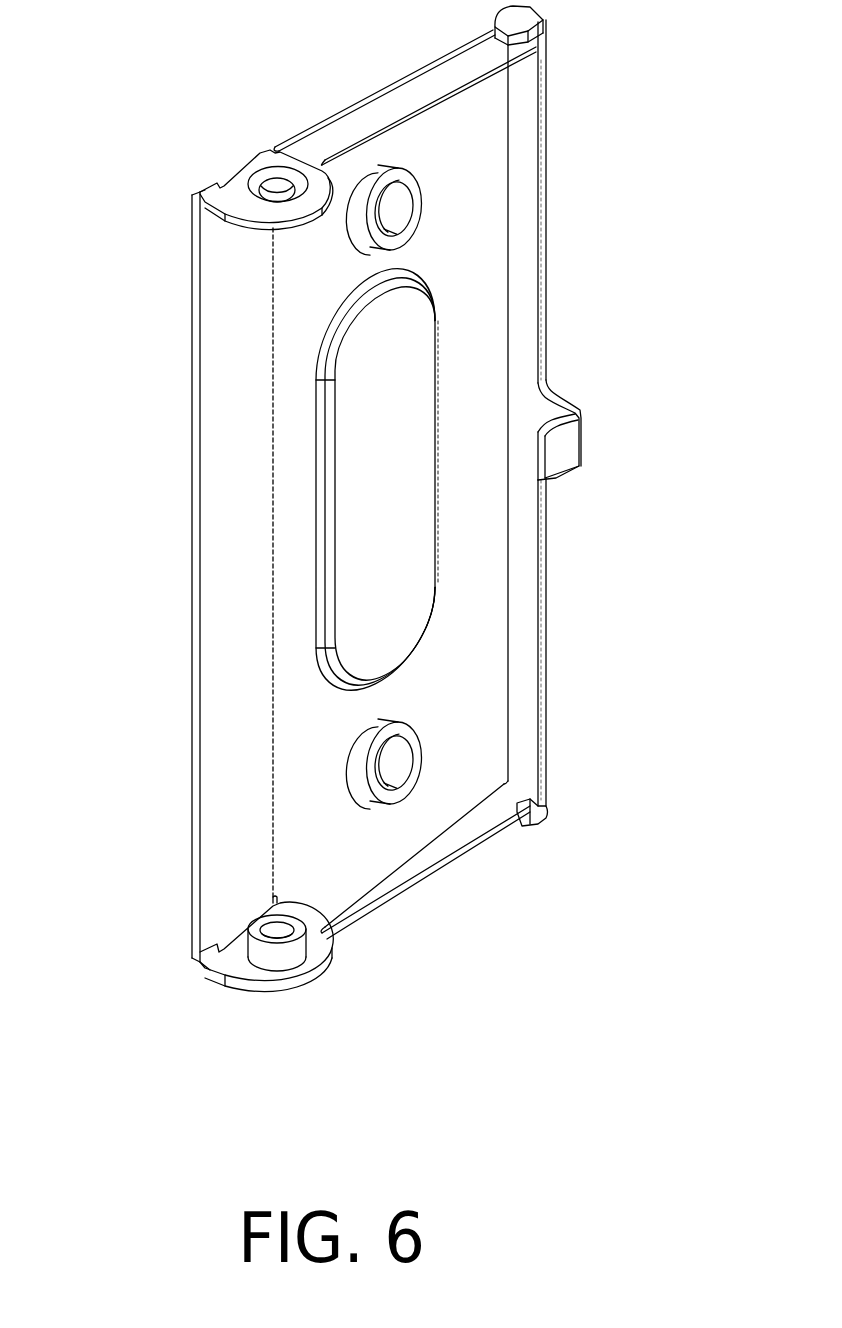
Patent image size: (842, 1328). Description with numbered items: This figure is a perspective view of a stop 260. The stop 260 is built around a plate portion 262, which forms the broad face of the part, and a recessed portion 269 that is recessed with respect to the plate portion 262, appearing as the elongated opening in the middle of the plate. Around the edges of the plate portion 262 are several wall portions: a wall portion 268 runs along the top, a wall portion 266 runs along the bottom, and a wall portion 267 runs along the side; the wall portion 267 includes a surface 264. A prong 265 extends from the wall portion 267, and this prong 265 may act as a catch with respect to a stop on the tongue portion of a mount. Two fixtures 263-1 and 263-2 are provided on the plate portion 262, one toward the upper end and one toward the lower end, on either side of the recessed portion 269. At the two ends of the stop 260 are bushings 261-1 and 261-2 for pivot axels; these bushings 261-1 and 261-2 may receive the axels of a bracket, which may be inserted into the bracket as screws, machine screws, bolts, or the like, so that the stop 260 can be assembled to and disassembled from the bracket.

The stop 260 is at (213, 48).
The plate portion 262 is at (479, 684).
The wall portion 268 is at (413, 87).
The wall portion 266 is at (430, 857).
The surface 264 is at (548, 268).
The wall portion 267 is at (540, 600).
The prong 265 is at (560, 467).
The recessed portion 269 is at (406, 499).
The fixture 263-1 is at (357, 765).
The fixture 263-2 is at (356, 240).
The bushing 261-1 is at (298, 940).
The bushing 261-2 is at (257, 182).